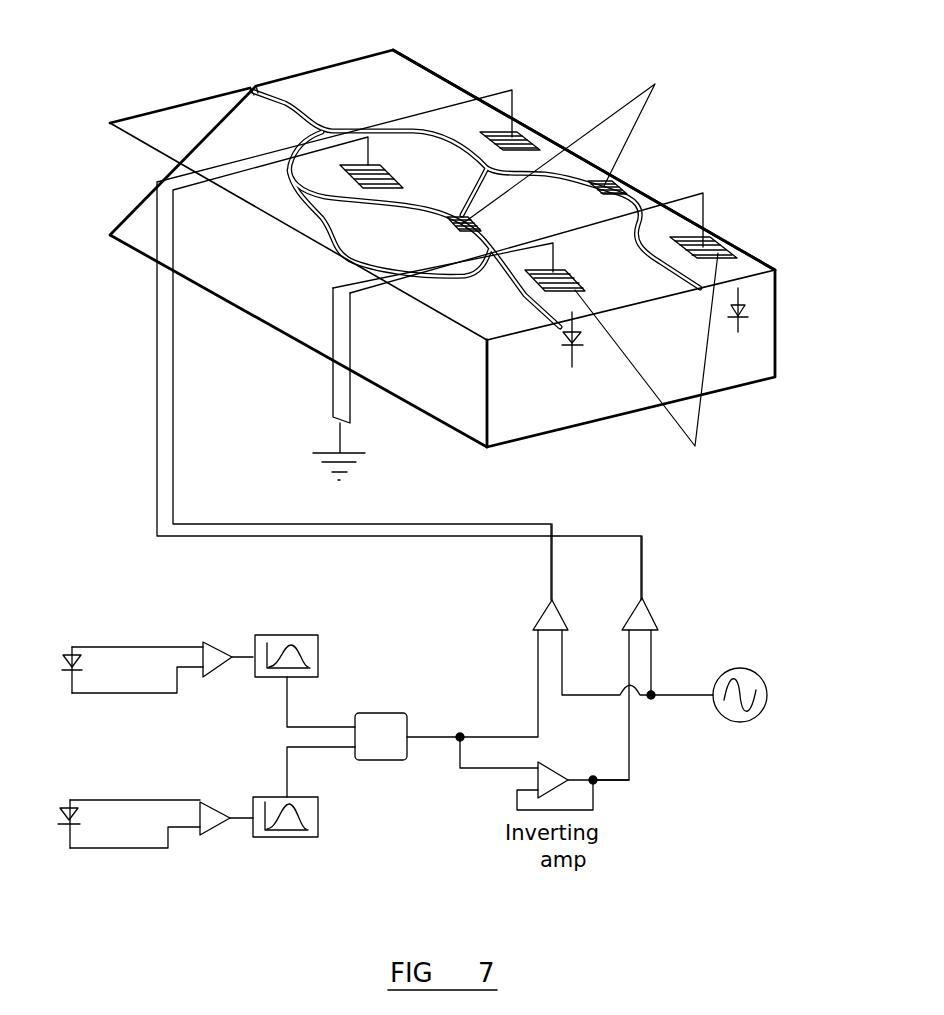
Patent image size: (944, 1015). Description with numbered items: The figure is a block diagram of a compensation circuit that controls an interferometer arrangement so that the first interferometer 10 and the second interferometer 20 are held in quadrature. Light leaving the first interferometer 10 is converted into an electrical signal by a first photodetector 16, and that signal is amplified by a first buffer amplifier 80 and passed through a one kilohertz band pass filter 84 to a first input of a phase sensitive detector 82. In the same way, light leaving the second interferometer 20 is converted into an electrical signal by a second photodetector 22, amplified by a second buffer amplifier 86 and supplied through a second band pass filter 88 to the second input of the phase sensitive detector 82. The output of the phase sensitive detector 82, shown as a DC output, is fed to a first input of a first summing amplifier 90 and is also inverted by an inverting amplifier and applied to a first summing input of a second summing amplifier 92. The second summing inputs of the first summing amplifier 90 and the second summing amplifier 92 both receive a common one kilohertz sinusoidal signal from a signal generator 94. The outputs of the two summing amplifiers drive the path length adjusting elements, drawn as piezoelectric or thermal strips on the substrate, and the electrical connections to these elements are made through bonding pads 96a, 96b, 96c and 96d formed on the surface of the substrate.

The first interferometer 10 is at (642, 183).
The first photodetector 16 is at (743, 312).
The second interferometer 20 is at (348, 252).
The second photodetector 22 is at (563, 332).
The first buffer amplifier 80 is at (218, 640).
The phase sensitive detector 82 is at (372, 712).
The 1 kHz band pass filter 84 is at (303, 634).
The second buffer amplifier 86 is at (218, 800).
The second band pass filter 88 is at (295, 838).
The first summing amplifier 90 is at (547, 612).
The second summing amplifier 92 is at (656, 620).
The signal generator 94 is at (716, 706).
The bonding pad 96a is at (514, 128).
The bonding pad 96b is at (786, 197).
The bonding pad 96c is at (343, 174).
The bonding pad 96d is at (526, 291).